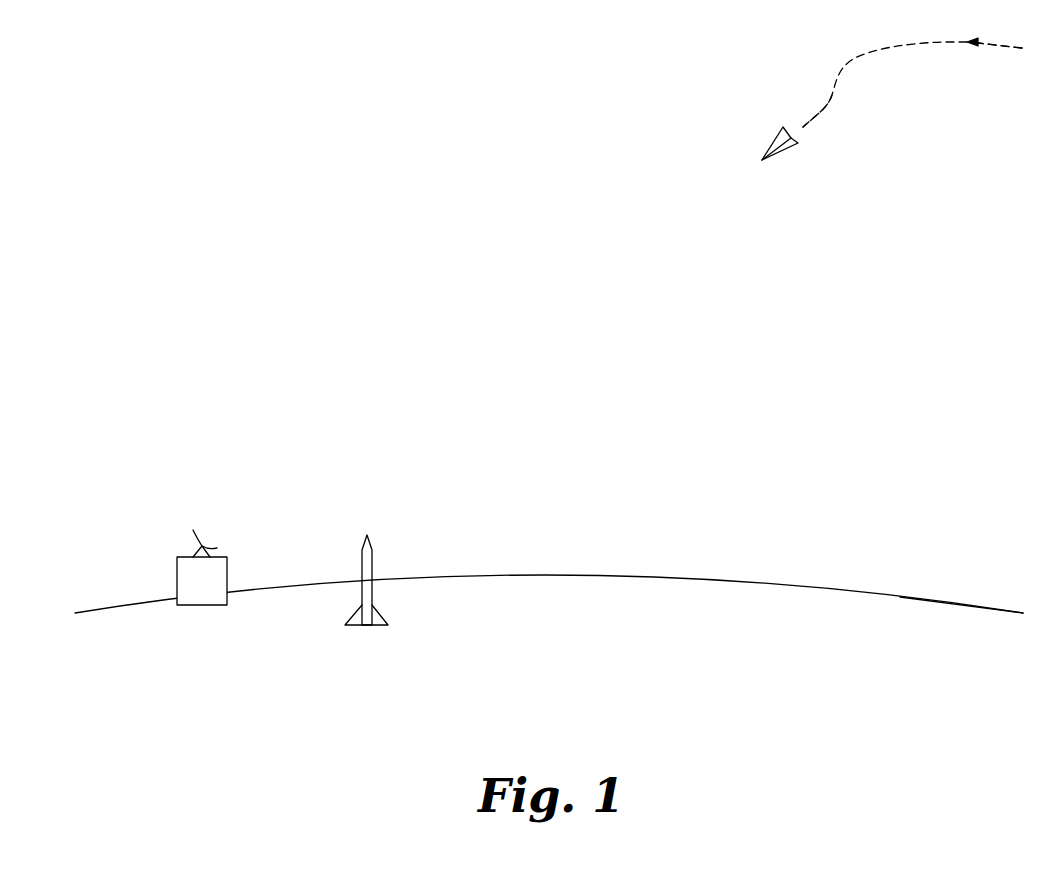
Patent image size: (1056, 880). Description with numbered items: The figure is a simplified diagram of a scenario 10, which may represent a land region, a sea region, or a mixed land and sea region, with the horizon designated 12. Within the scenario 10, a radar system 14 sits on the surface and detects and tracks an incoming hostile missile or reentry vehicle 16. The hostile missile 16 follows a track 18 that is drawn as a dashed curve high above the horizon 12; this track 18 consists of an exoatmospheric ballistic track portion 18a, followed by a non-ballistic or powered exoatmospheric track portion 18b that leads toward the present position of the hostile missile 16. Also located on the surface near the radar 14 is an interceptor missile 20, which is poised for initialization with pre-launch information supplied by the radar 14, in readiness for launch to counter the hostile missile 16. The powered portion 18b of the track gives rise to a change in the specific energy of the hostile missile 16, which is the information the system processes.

The scenario 10 is at (593, 630).
The horizon 12 is at (933, 602).
The radar system 14 is at (201, 606).
The hostile missile 16 is at (770, 144).
The track 18 is at (896, 100).
The exoatmospheric ballistic track portion 18a is at (947, 45).
The non-ballistic powered exoatmospheric track portion 18b is at (827, 103).
The interceptor missile 20 is at (365, 628).